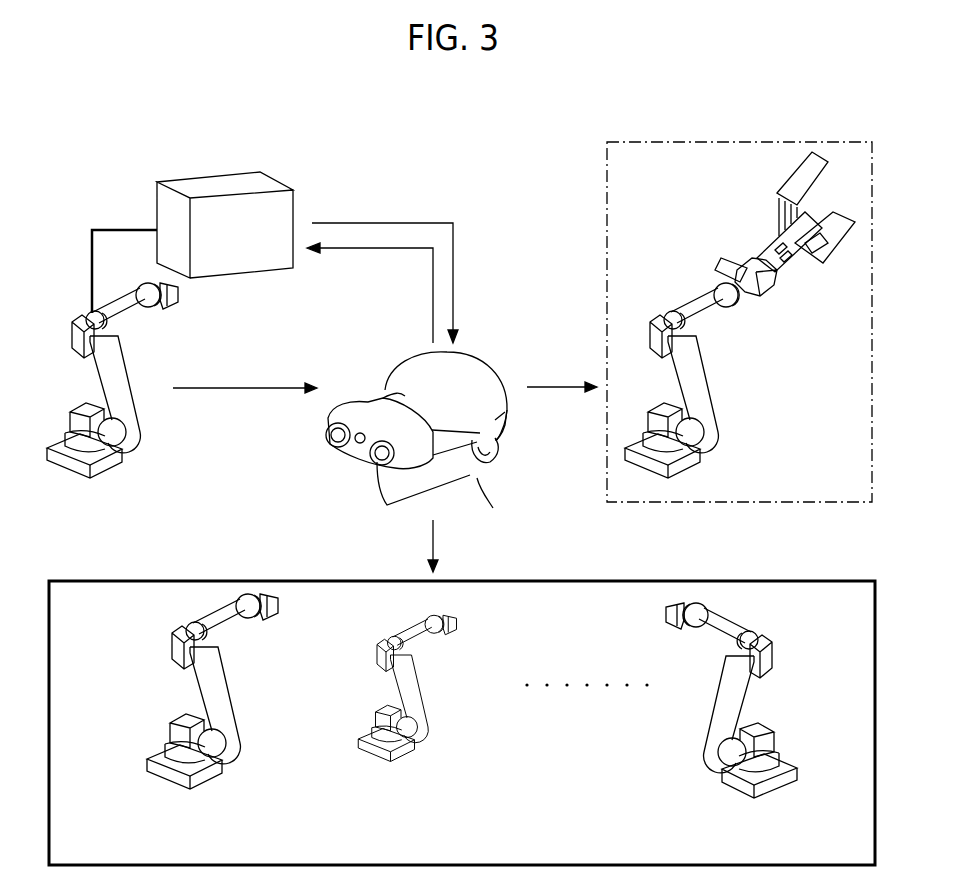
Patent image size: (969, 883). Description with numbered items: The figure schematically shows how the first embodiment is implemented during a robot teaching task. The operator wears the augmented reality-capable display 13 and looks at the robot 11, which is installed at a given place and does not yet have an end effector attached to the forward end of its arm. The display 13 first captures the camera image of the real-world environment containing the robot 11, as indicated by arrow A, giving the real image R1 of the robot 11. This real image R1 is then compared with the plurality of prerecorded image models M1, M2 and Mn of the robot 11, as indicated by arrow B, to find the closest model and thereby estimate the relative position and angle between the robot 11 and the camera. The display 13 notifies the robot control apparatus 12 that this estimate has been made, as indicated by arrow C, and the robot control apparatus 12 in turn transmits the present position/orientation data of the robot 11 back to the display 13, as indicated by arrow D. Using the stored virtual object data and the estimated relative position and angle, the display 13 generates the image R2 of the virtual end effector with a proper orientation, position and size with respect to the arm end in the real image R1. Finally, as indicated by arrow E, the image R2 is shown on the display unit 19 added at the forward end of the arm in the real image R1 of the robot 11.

The robot 11 is at (127, 445).
The robot control apparatus 12 is at (203, 178).
The augmented reality-capable display 13 is at (363, 397).
The display unit 19 is at (607, 170).
The arrow A is at (212, 393).
The arrow B is at (433, 542).
The arrow C is at (377, 250).
The arrow D is at (420, 222).
The arrow E is at (557, 387).
The real image of the robot R1 is at (700, 388).
The image of the virtual end effector R2 is at (767, 247).
The image model M1 is at (228, 718).
The image model M2 is at (428, 728).
The image model Mn is at (772, 732).